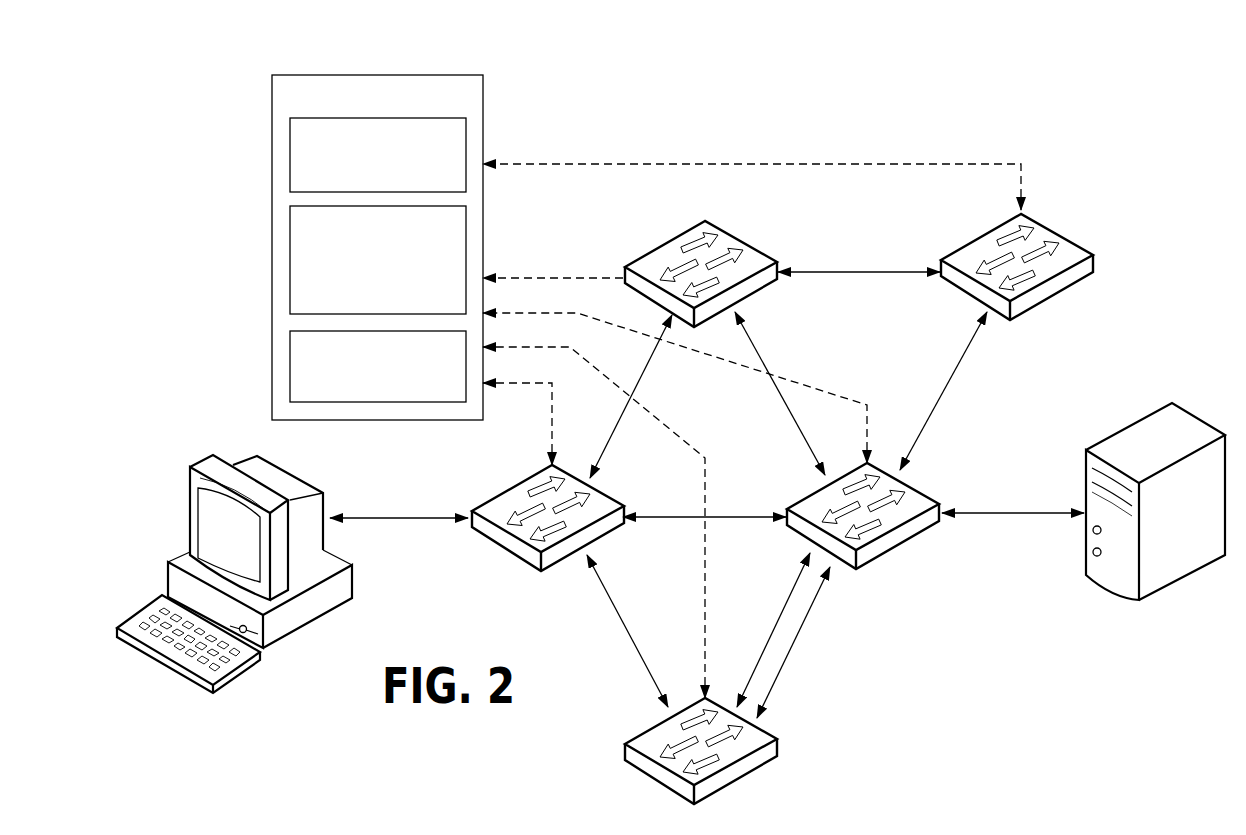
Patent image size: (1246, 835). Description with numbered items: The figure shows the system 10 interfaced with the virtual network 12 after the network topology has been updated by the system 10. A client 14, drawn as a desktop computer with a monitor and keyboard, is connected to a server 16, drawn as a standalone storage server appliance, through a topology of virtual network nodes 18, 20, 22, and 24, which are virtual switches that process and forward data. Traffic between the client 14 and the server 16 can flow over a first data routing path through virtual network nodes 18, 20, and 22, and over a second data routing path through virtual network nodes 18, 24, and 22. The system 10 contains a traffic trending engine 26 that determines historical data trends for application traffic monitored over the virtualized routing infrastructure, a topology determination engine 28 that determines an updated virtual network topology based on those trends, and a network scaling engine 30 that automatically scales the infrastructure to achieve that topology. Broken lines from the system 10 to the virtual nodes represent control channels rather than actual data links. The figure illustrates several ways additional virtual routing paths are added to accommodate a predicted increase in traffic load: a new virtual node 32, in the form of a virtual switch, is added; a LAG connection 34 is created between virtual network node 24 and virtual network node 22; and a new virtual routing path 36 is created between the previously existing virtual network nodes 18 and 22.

The system 10 is at (378, 75).
The virtual network 12 is at (929, 137).
The client 14 is at (188, 511).
The server 16 is at (1198, 420).
The virtual network node 18 is at (505, 555).
The virtual network node 20 is at (672, 242).
The virtual network node 22 is at (900, 548).
The virtual network node 24 is at (660, 788).
The traffic trending engine 26 is at (290, 158).
The topology determination engine 28 is at (290, 262).
The network scaling engine 30 is at (290, 367).
The virtual node 32 is at (985, 240).
The LAG connection 34 is at (808, 641).
The link 36 is at (746, 510).